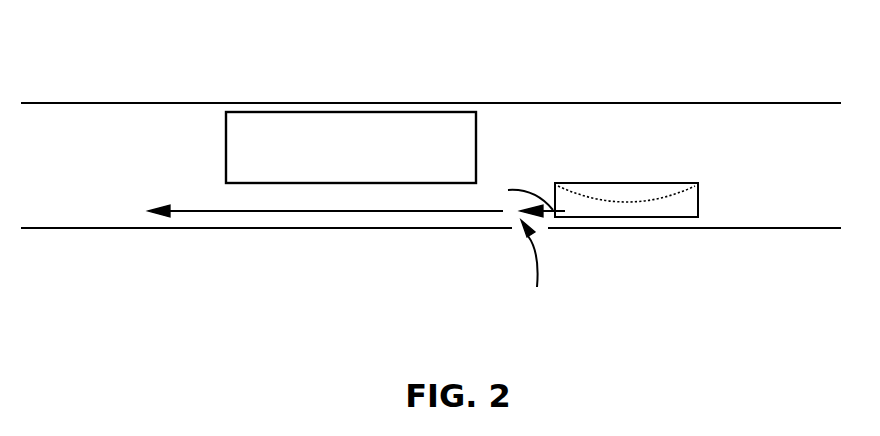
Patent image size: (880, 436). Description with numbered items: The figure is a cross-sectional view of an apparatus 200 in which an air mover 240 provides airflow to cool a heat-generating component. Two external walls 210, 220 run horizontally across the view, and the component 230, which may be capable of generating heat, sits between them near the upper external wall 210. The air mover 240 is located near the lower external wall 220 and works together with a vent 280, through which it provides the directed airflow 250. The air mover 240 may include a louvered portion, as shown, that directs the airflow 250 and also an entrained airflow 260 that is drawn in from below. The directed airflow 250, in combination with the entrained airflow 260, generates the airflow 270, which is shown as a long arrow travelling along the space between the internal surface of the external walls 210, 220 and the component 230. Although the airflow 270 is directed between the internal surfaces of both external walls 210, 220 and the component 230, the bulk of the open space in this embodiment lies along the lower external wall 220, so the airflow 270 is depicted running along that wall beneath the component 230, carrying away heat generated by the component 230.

The apparatus 200 is at (72, 33).
The external wall 210 is at (485, 103).
The external wall 220 is at (281, 227).
The component 230 is at (351, 147).
The air mover 240 is at (680, 208).
The airflow 250 is at (553, 210).
The entrained airflow 260 is at (541, 256).
The airflow 270 is at (147, 211).
The vent 280 is at (547, 228).